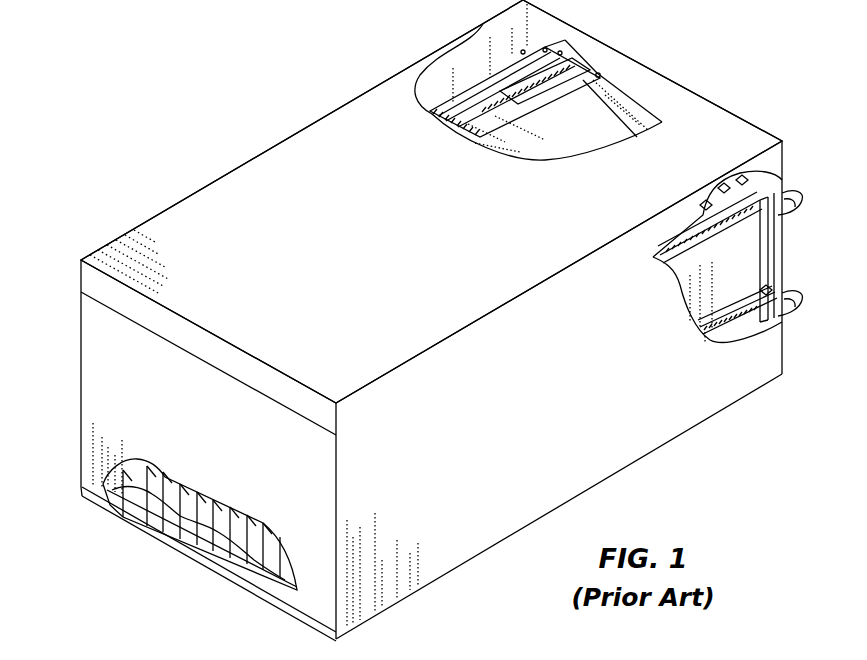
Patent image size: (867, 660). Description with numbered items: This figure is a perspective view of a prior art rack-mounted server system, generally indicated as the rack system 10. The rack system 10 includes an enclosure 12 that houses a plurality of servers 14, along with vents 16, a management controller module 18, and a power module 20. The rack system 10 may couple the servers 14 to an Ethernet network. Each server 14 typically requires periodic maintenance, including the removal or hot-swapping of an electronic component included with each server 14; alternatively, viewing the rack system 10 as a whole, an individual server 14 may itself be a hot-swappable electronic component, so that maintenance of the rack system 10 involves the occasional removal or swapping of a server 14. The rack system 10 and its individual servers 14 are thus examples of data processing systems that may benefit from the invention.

The rack system 10 is at (222, 92).
The enclosure 12 is at (357, 109).
The servers 14 is at (153, 506).
The vents 16 is at (232, 562).
The management controller module 18 is at (492, 76).
The power module 20 is at (572, 68).